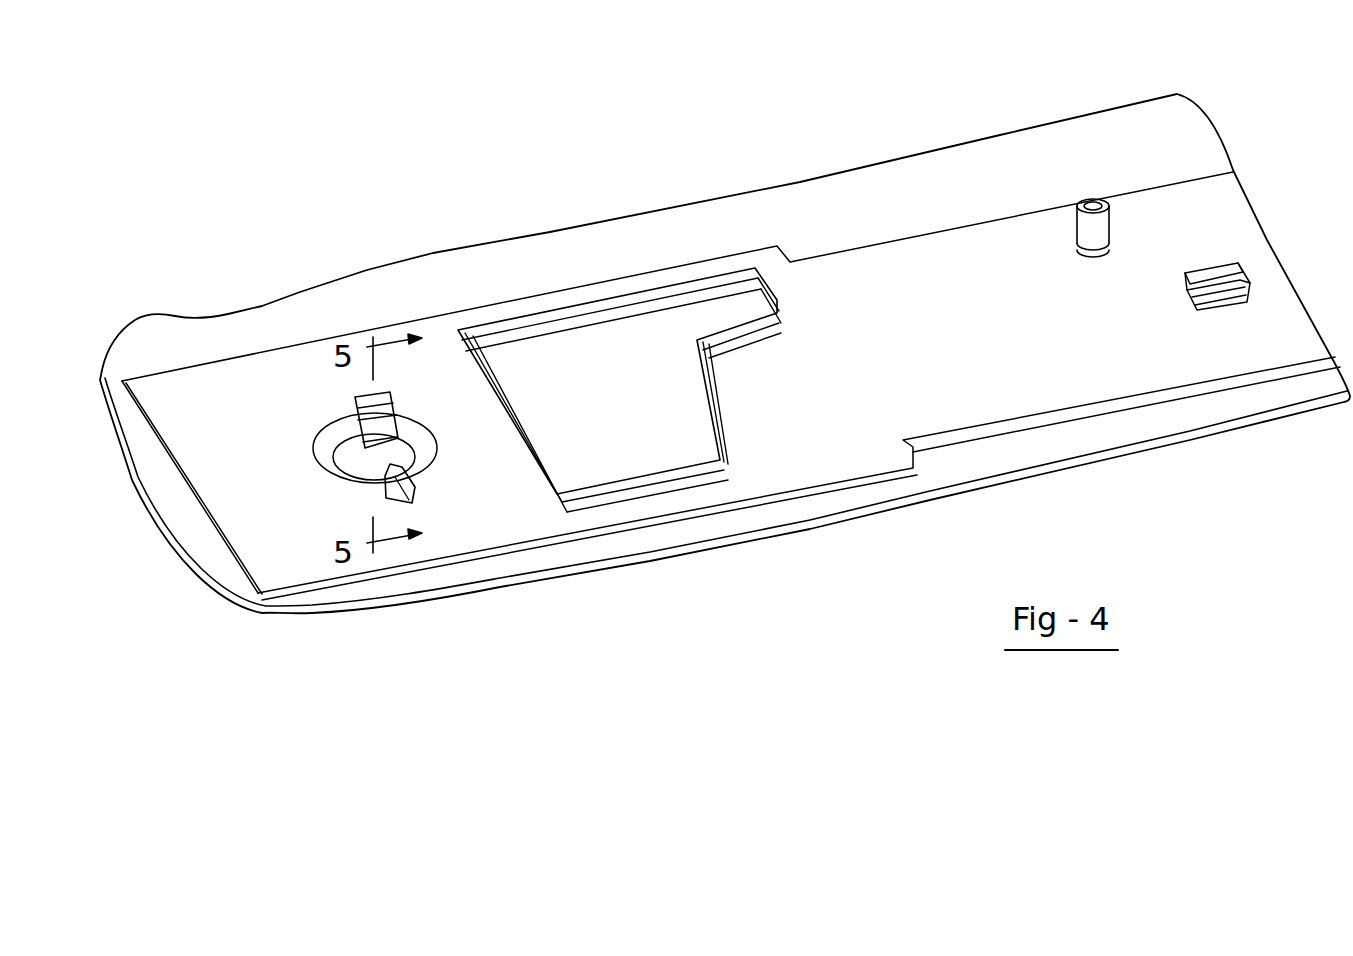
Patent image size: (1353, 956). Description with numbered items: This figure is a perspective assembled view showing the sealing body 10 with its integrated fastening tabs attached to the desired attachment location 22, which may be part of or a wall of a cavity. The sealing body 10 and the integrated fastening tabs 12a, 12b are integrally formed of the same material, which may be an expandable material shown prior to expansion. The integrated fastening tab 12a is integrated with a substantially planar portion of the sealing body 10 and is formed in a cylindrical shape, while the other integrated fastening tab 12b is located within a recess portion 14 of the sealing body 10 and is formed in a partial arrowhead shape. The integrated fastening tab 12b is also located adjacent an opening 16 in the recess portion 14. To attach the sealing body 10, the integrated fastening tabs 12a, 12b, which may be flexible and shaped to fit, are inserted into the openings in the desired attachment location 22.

The sealing body 10 is at (966, 437).
The desired attachment location 22 is at (890, 213).
The integrated fastening tab 12a is at (1093, 205).
The integrated fastening tab 12b is at (382, 403).
The recess portion 14 is at (331, 447).
The opening 16 is at (417, 485).